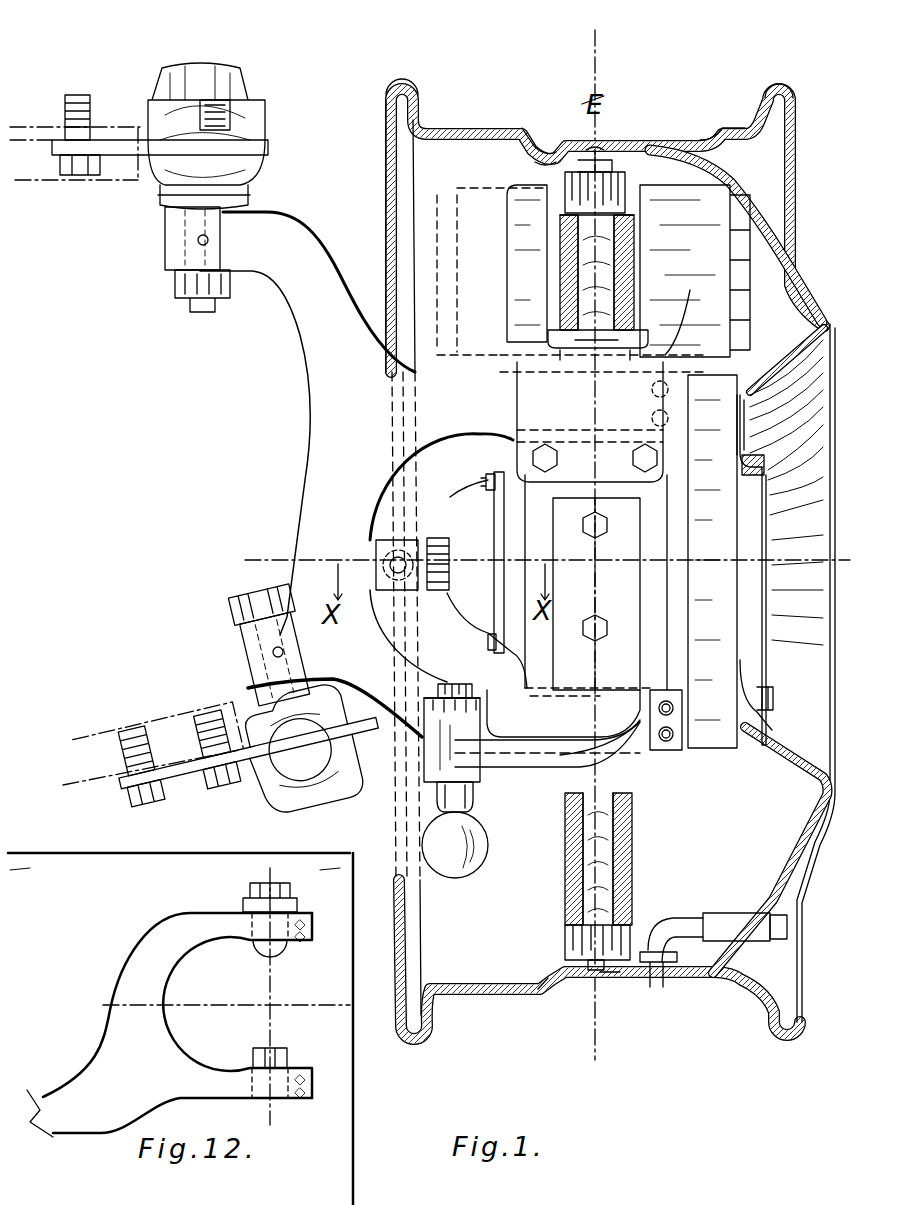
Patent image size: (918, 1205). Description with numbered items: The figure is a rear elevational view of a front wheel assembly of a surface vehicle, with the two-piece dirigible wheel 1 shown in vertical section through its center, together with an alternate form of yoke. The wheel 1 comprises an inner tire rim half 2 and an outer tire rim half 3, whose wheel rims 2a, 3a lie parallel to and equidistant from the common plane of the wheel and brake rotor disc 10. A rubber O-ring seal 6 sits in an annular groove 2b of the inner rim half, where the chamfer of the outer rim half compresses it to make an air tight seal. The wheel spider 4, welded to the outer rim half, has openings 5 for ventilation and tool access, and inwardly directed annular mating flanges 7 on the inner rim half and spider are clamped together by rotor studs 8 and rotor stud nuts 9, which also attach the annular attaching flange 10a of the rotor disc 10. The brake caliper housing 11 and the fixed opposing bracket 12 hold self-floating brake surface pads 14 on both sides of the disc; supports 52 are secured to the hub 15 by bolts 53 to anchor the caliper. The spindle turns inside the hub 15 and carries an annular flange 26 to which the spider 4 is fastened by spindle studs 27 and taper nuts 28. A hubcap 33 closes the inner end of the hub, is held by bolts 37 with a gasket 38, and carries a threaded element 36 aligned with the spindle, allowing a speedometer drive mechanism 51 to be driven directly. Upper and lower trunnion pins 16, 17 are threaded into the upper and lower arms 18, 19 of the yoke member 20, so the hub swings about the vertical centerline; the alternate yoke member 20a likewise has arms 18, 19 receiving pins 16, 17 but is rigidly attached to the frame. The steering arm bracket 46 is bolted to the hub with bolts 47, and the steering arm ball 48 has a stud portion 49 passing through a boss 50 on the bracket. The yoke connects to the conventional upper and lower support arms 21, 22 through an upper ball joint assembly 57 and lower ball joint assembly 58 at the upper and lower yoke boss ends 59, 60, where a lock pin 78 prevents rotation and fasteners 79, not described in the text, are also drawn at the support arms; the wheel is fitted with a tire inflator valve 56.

In FIG. 1, the dirigible wheel 1 is at (382, 124).
In FIG. 1, the inner tire rim half 2 is at (478, 128).
In FIG. 1, the wheel rim 2a is at (401, 77).
In FIG. 1, the annular groove 2b is at (536, 160).
In FIG. 1, the outer tire rim half 3 is at (655, 140).
In FIG. 1, the wheel rim 3a is at (785, 85).
In FIG. 1, the wheel spider 4 is at (714, 160).
In FIG. 1, the opening 5 is at (745, 176).
In FIG. 1, the rubber O-ring seal 6 is at (540, 144).
In FIG. 1, the annular mating flange 7 is at (574, 140).
In FIG. 1, the rotor stud 8 is at (577, 972).
In FIG. 1, the rotor stud nut 9 is at (613, 972).
In FIG. 1, the brake rotor disc 10 is at (635, 858).
In FIG. 1, the annular attaching flange 10a is at (577, 920).
In FIG. 1, the caliper housing 11 is at (698, 298).
In FIG. 1, the fixed opposing bracket 12 is at (540, 289).
In FIG. 1, the brake surface pad 14 is at (630, 224).
In FIG. 1, the hub 15 is at (657, 551).
In FIG. 12, the upper trunnion pin 16 is at (256, 953).
In FIG. 12, the lower trunnion pin 17 is at (252, 1058).
In FIG. 1, the upper yoke arm 18 is at (478, 390).
In FIG. 12, the upper yoke arm 18 is at (238, 944).
In FIG. 1, the lower yoke arm 19 is at (532, 742).
In FIG. 12, the lower yoke arm 19 is at (238, 1104).
In FIG. 1, the yoke member 20 is at (374, 498).
In FIG. 12, the alternate yoke member 20a is at (169, 1025).
In FIG. 1, the upper support arm 21 is at (110, 127).
In FIG. 1, the lower support arm 22 is at (80, 790).
In FIG. 1, the annular flange 26 is at (714, 521).
In FIG. 1, the spindle stud 27 is at (800, 684).
In FIG. 1, the taper nut 28 is at (764, 710).
In FIG. 1, the hubcap 33 is at (466, 526).
In FIG. 1, the threaded element 36 is at (449, 600).
In FIG. 1, the bolt 37 is at (486, 484).
In FIG. 1, the gasket 38 is at (497, 472).
In FIG. 1, the steering arm bracket 46 is at (643, 651).
In FIG. 1, the bolt 47 is at (613, 627).
In FIG. 1, the steering arm ball 48 is at (467, 848).
In FIG. 1, the stud portion 49 is at (448, 681).
In FIG. 1, the boss 50 is at (468, 773).
In FIG. 1, the speedometer drive mechanism 51 is at (405, 580).
In FIG. 1, the support 52 is at (574, 422).
In FIG. 1, the bolt 53 is at (642, 445).
In FIG. 1, the tire inflator valve 56 is at (727, 920).
In FIG. 1, the upper ball joint assembly 57 is at (235, 80).
In FIG. 1, the lower ball joint assembly 58 is at (290, 808).
In FIG. 1, the upper ball joint yoke boss end 59 is at (176, 258).
In FIG. 1, the lower ball joint yoke boss end 60 is at (245, 642).
In FIG. 1, the lock pin 78 is at (198, 239).
In FIG. 1, the bolt 79 is at (78, 95).